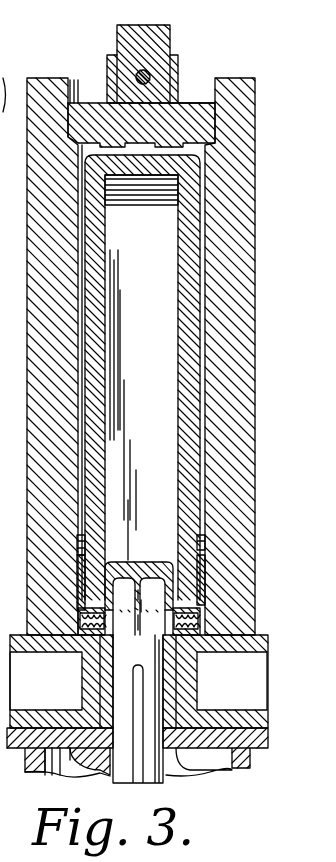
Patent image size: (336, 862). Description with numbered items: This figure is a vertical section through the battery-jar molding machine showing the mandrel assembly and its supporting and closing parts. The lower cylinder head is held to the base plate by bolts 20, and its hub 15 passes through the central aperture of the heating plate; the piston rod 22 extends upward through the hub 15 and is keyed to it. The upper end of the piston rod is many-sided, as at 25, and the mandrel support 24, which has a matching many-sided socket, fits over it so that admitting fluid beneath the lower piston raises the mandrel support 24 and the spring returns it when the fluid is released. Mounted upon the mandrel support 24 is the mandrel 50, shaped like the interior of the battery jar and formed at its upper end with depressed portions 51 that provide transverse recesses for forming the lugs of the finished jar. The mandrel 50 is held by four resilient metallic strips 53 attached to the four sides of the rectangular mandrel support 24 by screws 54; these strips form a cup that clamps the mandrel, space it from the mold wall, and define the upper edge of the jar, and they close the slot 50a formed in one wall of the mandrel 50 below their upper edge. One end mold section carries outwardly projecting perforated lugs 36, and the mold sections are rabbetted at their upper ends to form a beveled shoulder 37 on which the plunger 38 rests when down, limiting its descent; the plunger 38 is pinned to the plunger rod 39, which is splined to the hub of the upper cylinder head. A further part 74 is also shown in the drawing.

The hub 15 is at (168, 699).
The bolts 20 is at (240, 421).
The piston rod 22 is at (125, 778).
The mandrel support 24 is at (106, 614).
The many-sided upper end of the piston 25 is at (152, 585).
The perforated lugs 36 is at (8, 78).
The beveled shoulder 37 is at (213, 143).
The plunger 38 is at (196, 101).
The plunger rod 39 is at (128, 45).
The mandrel 50 is at (100, 354).
The opening or slot 50a is at (199, 551).
The depressed portions 51 is at (148, 201).
The metallic strips 53 is at (77, 560).
The screws 54 is at (82, 638).
The mounting plate 74 is at (213, 658).